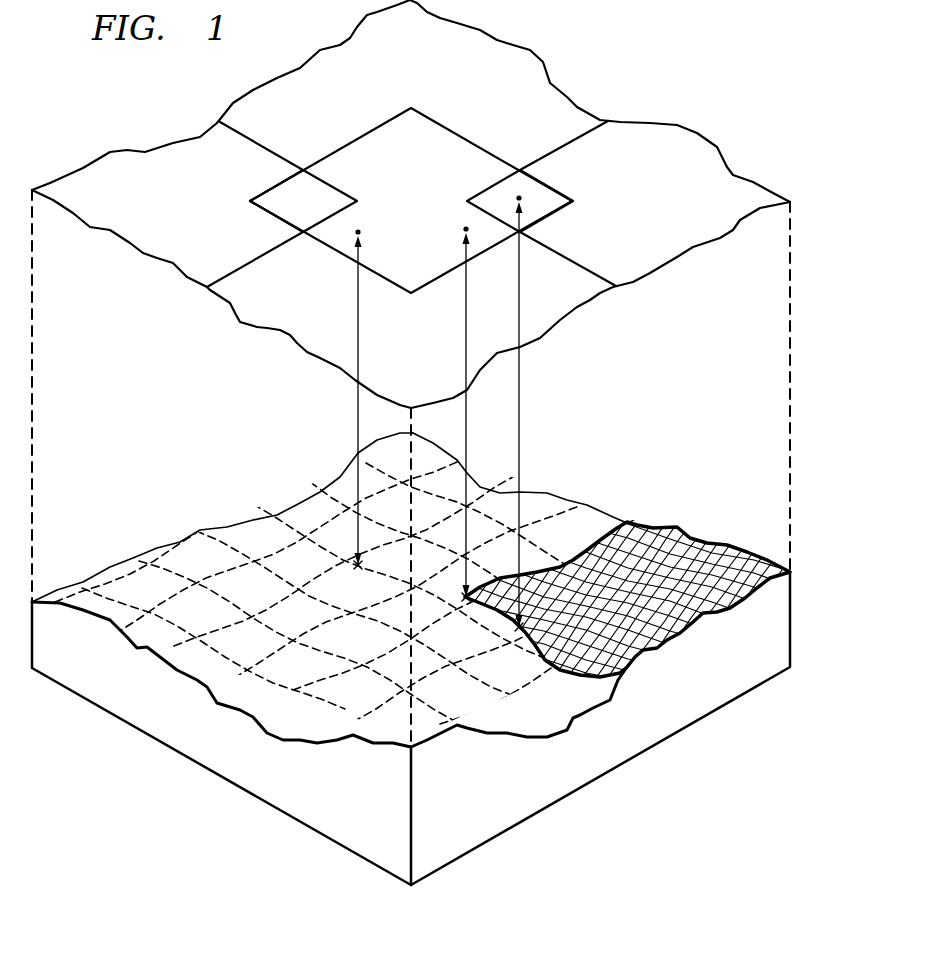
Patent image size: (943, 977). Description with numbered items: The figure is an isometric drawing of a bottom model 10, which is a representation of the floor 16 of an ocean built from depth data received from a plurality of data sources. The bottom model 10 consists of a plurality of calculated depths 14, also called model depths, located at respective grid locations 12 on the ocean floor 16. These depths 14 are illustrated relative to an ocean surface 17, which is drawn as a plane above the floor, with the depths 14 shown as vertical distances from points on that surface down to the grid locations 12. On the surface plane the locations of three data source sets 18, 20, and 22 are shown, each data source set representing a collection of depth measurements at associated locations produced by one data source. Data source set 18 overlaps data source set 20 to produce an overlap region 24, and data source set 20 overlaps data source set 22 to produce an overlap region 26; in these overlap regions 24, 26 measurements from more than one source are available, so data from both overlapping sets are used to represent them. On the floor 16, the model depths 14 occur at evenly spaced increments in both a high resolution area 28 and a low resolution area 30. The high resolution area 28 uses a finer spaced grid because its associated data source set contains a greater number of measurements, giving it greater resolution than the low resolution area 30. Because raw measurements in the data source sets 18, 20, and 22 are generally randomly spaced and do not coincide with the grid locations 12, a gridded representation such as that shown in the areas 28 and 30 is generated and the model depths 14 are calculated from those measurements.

The bottom model 10 is at (670, 57).
The grid locations 12 is at (359, 570).
The calculated depths 14 is at (439, 411).
The ocean floor 16 is at (293, 742).
The ocean surface 17 is at (265, 328).
The data source set 18 is at (682, 139).
The data source set 20 is at (435, 133).
The data source set 22 is at (147, 145).
The overlap region 24 is at (512, 183).
The overlap region 26 is at (313, 184).
The high resolution area 28 is at (653, 527).
The low resolution area 30 is at (463, 750).